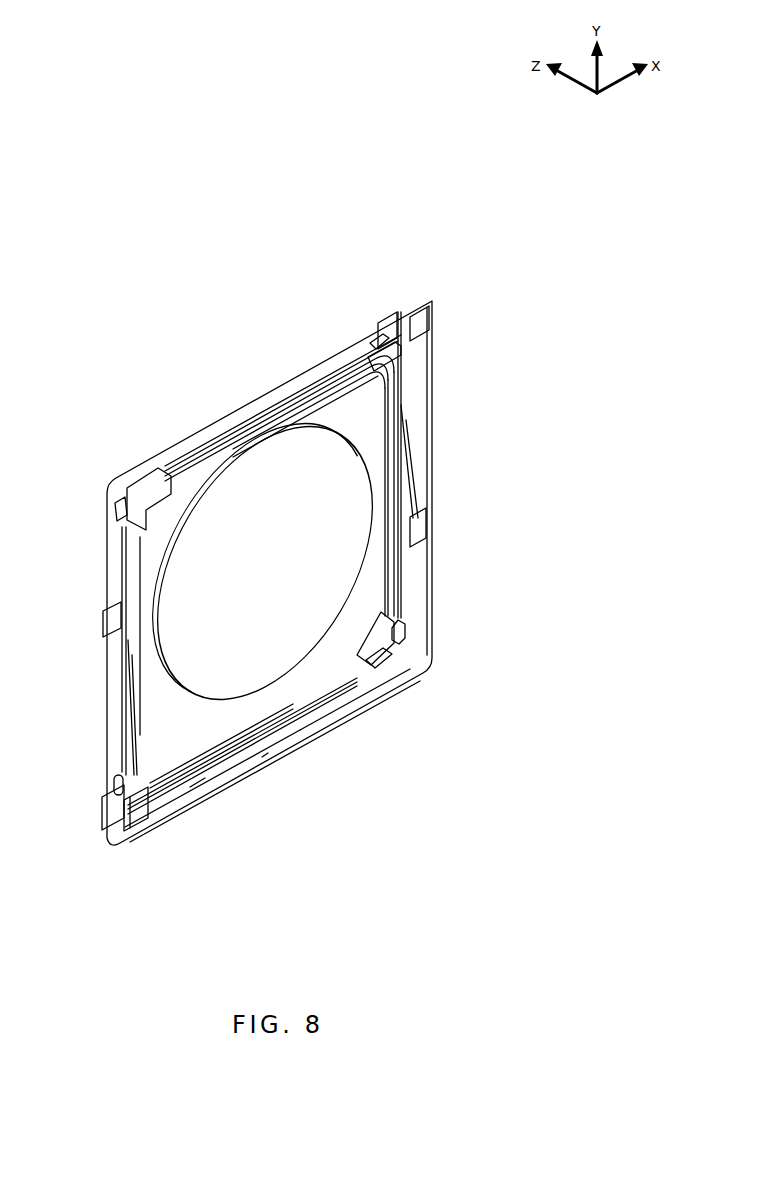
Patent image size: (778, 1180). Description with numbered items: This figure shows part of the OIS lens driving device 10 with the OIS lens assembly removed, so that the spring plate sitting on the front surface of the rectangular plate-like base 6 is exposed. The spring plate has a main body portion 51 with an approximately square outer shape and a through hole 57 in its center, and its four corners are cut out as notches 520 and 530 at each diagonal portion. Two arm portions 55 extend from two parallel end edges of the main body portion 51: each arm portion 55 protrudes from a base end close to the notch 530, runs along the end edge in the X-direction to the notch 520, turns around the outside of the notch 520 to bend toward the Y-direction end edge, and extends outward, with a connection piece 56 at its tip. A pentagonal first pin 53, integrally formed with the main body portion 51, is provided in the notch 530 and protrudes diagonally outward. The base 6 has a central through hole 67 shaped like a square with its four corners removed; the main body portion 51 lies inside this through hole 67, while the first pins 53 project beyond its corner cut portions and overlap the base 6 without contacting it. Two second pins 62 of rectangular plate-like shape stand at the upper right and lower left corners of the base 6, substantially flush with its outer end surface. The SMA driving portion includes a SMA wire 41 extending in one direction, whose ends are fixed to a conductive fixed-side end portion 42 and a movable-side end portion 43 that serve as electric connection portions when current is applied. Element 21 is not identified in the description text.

The OIS lens driving device 10 is at (64, 358).
The base 6 is at (420, 603).
The bottom plate 21 is at (197, 783).
The SMA wire 41 is at (253, 420).
The fixed-side end portion 42 is at (378, 340).
The movable-side end portion 43 is at (134, 474).
The main body portion 51 is at (200, 485).
The notch 520 is at (330, 378).
The notch 530 is at (374, 690).
The first pin 53 is at (150, 503).
The arm portion 55 is at (130, 720).
The connection piece 56 is at (107, 620).
The through hole 57 is at (243, 497).
The second pin 62 is at (412, 327).
The through hole 67 is at (262, 757).